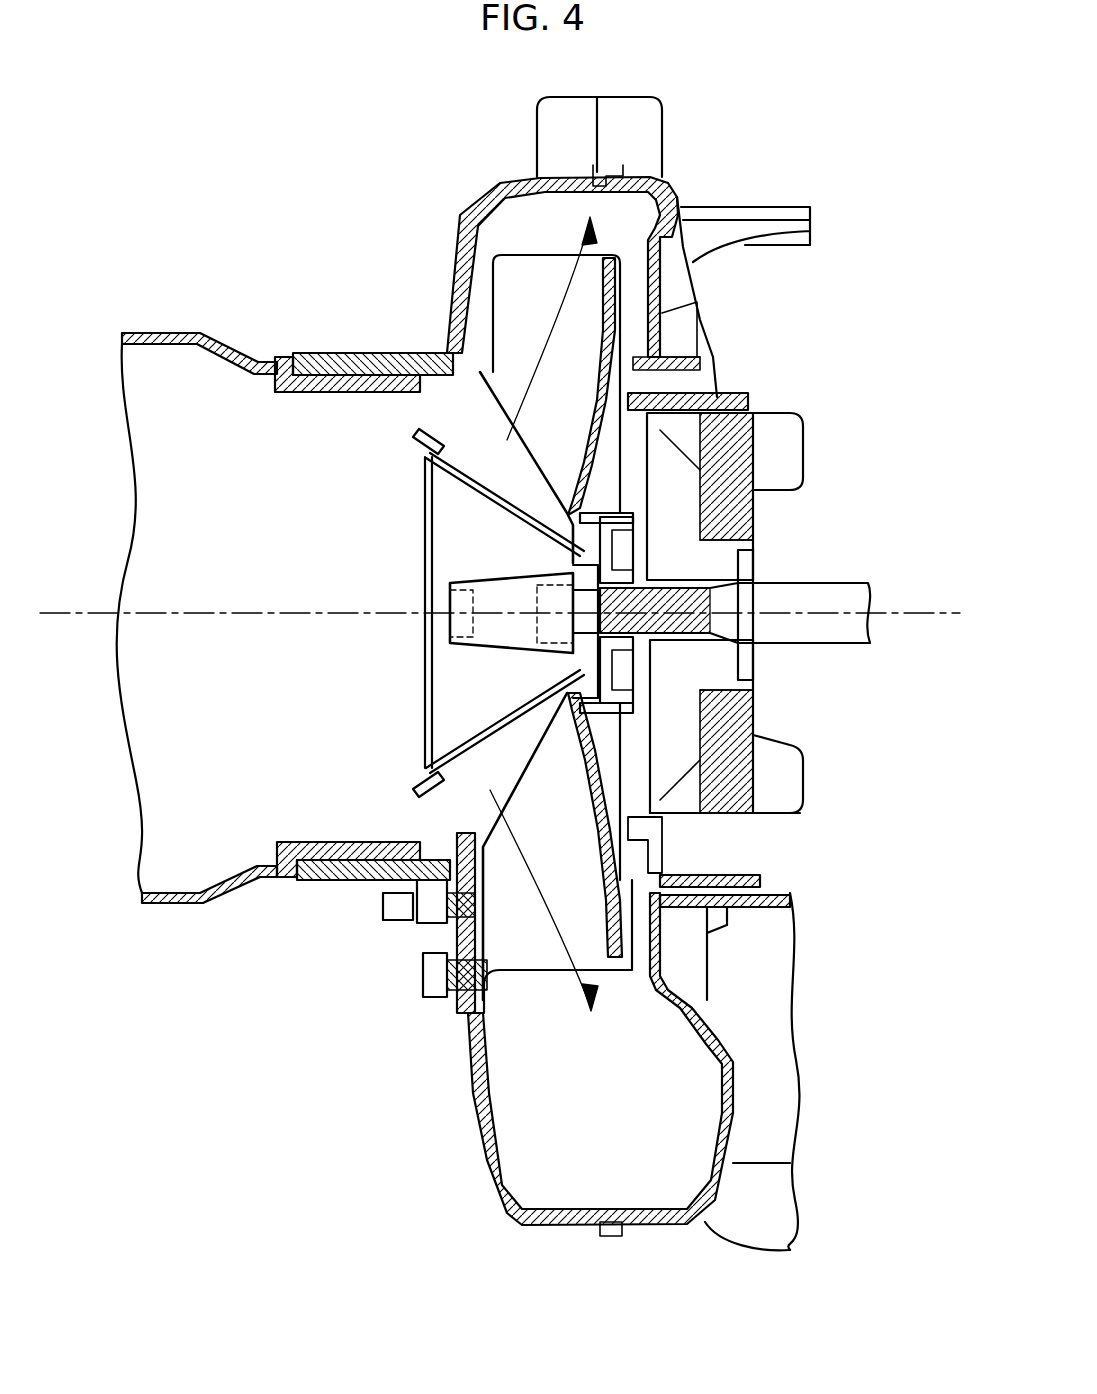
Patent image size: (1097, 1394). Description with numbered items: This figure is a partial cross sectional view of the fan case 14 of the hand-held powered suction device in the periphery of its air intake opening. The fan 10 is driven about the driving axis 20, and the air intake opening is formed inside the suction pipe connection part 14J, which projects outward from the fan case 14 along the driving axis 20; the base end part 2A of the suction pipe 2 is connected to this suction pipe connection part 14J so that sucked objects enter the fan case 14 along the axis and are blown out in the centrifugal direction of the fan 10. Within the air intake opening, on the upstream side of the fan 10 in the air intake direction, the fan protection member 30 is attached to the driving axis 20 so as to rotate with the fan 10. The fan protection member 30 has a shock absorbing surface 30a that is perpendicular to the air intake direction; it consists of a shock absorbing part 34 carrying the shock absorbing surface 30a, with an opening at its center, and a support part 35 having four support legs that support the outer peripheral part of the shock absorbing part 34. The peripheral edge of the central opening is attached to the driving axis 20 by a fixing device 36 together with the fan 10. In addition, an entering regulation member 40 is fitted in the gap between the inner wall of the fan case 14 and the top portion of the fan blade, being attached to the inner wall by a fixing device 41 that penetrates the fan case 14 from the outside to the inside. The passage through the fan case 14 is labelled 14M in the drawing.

The suction pipe 2 is at (160, 333).
The base end part of the suction pipe 2A is at (300, 393).
The fan 10 is at (462, 1020).
The fan case 14 is at (470, 213).
The suction pipe connection part 14J is at (332, 353).
The air passage in casing 14M is at (638, 220).
The driving axis 20 is at (715, 575).
The fan protection member 30 is at (364, 788).
The shock absorbing surface 30a is at (423, 699).
The shock absorbing part 34 is at (420, 447).
The support part 35 is at (432, 531).
The fixing device 36 is at (522, 640).
The entering regulation member 40 is at (395, 917).
The fixing device 41 is at (413, 974).